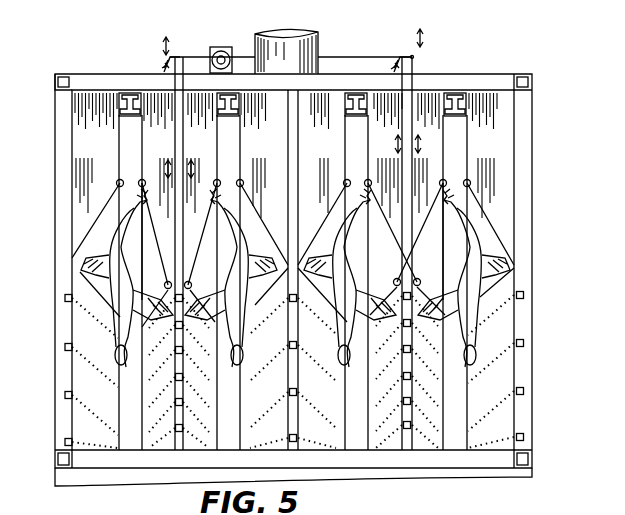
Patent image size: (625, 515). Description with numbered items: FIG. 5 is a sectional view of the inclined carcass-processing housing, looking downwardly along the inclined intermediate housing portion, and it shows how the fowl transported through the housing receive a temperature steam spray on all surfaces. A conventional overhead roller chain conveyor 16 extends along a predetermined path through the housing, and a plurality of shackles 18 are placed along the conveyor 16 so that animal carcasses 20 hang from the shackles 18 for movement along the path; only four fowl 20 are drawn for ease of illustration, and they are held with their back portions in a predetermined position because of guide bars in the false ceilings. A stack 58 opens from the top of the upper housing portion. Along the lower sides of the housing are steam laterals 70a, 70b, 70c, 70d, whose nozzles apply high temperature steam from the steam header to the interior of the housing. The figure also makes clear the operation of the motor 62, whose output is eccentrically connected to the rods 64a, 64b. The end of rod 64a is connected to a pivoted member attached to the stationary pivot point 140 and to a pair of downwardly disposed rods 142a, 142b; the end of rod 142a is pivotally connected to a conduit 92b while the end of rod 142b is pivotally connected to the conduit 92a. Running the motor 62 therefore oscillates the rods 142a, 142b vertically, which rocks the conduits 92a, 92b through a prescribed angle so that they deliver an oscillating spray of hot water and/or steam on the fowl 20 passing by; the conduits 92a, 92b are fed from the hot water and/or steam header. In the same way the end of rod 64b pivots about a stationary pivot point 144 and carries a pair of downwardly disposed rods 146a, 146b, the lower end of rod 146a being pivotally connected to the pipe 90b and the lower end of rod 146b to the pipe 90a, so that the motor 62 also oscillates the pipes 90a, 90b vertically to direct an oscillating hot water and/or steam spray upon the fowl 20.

The overhead roller chain conveyor 16 is at (121, 100).
The shackles 18 is at (132, 148).
The animal carcasses 20 is at (107, 250).
The stack 58 is at (279, 36).
The motor 62 is at (226, 47).
The rod 64a is at (195, 56).
The rod 64b is at (357, 56).
The steam lateral 70a is at (547, 295).
The steam lateral 70b is at (547, 343).
The steam lateral 70c is at (547, 391).
The steam lateral 70d is at (547, 437).
The pipe 90a is at (420, 238).
The pipe 90b is at (396, 246).
The conduit 92a is at (231, 278).
The conduit 92b is at (164, 248).
The stationary pivot point 140 is at (166, 70).
The downwardly disposed rod 142a is at (247, 153).
The downwardly disposed rod 142b is at (239, 231).
The stationary pivot point 144 is at (416, 70).
The downwardly disposed rod 146a is at (473, 151).
The downwardly disposed rod 146b is at (444, 228).